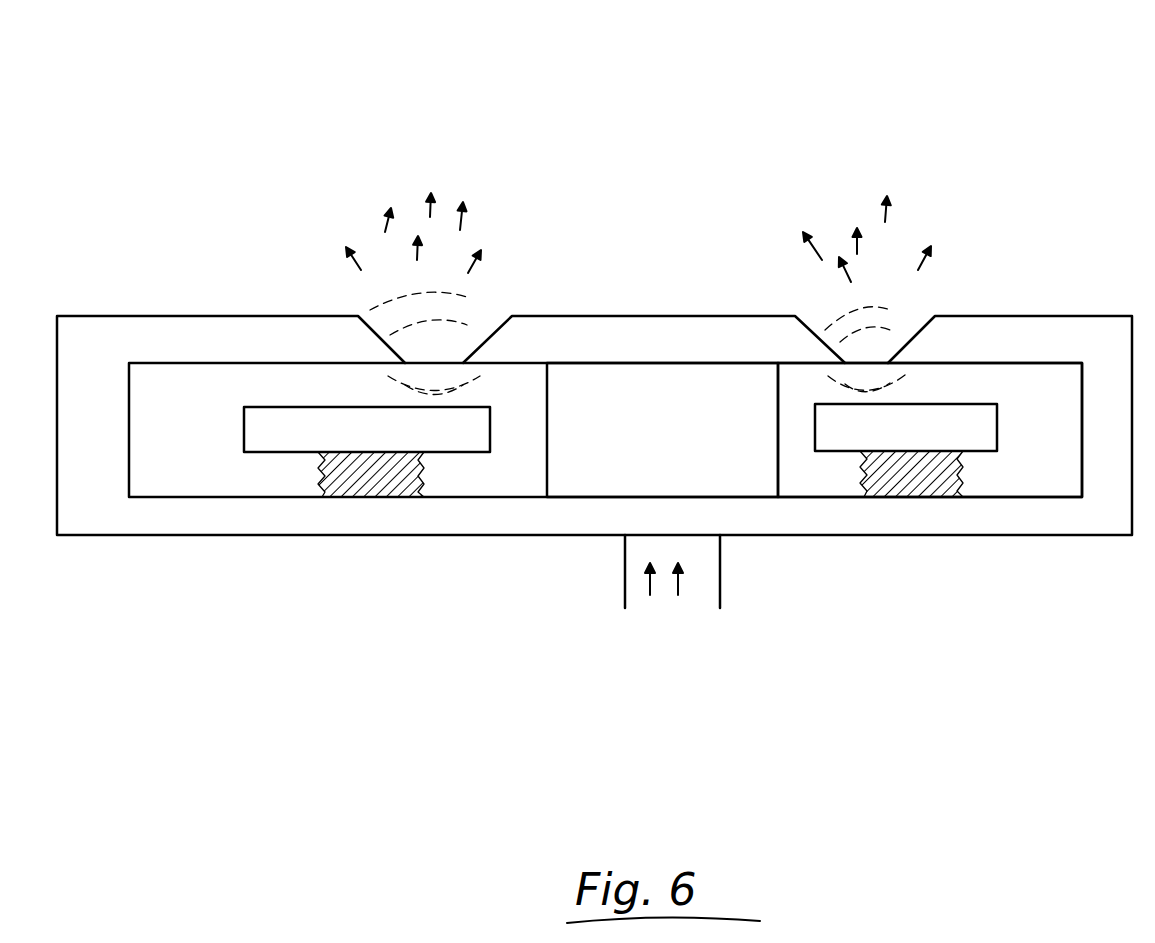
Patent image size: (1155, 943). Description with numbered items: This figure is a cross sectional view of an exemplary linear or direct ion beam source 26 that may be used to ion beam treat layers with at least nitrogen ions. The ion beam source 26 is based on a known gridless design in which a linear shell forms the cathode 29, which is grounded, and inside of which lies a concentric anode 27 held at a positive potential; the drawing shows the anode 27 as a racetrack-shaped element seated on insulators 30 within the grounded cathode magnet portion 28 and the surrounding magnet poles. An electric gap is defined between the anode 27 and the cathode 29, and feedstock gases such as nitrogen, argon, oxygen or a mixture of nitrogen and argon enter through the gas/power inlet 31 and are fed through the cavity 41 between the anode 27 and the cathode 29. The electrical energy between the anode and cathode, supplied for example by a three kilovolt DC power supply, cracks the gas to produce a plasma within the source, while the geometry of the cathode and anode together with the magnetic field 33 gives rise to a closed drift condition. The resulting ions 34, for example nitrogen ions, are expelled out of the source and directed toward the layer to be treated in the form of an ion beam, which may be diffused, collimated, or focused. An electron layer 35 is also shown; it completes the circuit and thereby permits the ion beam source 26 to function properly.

The ion beam source 26 is at (655, 94).
The anode 27 is at (244, 428).
The grounded cathode magnet portion 28 is at (750, 386).
The cathode 29 is at (200, 330).
The insulators 30 is at (382, 490).
The gas/power inlet 31 is at (720, 583).
The magnetic field 33 is at (472, 322).
The ions 34 is at (358, 268).
The electron layer 35 is at (447, 357).
The cavity 41 is at (810, 484).